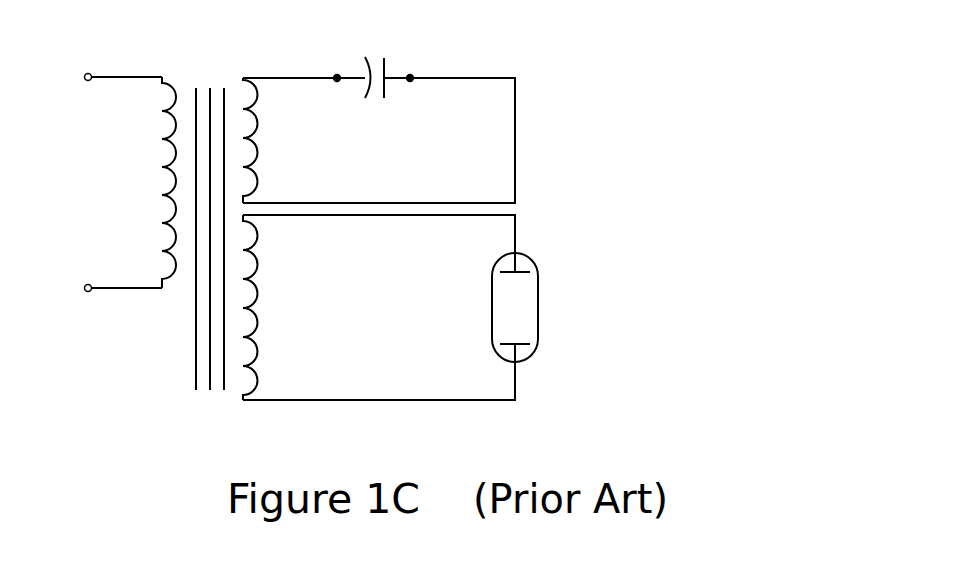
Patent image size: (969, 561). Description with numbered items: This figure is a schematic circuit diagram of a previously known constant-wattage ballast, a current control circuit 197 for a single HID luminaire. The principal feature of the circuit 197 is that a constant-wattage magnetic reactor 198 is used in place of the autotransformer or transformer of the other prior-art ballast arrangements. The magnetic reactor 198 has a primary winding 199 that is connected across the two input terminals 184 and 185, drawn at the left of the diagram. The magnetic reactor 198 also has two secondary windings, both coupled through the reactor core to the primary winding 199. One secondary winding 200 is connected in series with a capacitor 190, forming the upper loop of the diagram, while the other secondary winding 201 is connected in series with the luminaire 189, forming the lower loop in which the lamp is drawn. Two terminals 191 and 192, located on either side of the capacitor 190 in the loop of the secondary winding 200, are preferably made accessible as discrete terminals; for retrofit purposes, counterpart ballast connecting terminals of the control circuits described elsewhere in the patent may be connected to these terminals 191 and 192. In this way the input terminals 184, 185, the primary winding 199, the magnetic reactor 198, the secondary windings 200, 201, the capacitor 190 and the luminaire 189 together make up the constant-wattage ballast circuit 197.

The input terminal 184 is at (114, 97).
The input terminal 185 is at (114, 274).
The primary winding 199 is at (167, 197).
The constant-wattage magnetic reactor 198 is at (178, 392).
The circuit 197 is at (466, 122).
The secondary winding 200 is at (262, 140).
The secondary winding 201 is at (259, 297).
The capacitor 190 is at (377, 99).
The terminal 191 is at (337, 78).
The terminal 192 is at (410, 78).
The luminaire 189 is at (538, 307).